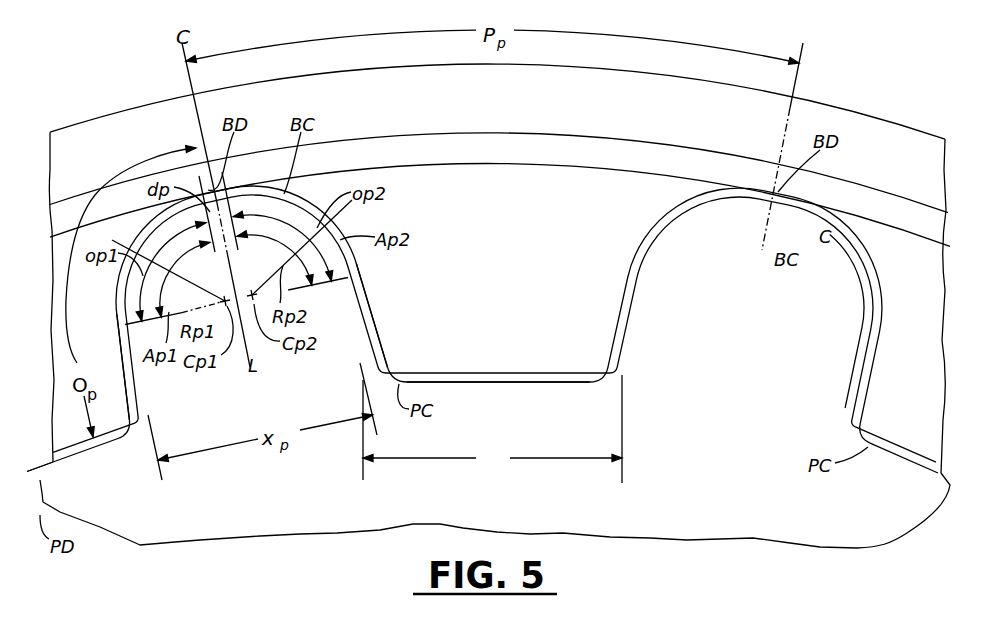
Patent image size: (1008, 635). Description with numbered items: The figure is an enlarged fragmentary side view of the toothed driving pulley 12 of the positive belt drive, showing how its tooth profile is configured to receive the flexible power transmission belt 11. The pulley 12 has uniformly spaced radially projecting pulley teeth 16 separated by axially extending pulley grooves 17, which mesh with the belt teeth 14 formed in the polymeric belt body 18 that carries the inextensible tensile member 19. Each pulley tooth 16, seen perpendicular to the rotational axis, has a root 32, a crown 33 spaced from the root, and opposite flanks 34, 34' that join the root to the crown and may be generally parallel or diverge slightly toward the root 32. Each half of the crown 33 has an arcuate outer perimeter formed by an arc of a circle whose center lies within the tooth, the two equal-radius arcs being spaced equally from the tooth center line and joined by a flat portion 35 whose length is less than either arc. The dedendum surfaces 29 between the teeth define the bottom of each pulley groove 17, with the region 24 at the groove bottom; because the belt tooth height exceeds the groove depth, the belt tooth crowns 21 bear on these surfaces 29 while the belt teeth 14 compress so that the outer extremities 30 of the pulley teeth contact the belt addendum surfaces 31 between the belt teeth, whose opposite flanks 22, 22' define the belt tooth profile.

The flexible power transmission belt 11 is at (110, 122).
The toothed driving pulley 12 is at (760, 487).
The belt teeth 14 is at (580, 342).
The pulley teeth 16 is at (340, 294).
The pulley grooves 17 is at (361, 306).
The belt body 18 is at (803, 117).
The tensile member 19 is at (660, 161).
The crown of belt tooth 21 is at (116, 447).
The flanks of belt tooth 22 is at (362, 364).
The opposite slot side wall 22' is at (610, 318).
The slot bottom inner surface 24 is at (412, 374).
The dedendum surfaces of pulley 29 is at (81, 455).
The outer extremities of pulley teeth 30 is at (796, 235).
The addendum surface of belt 31 is at (832, 228).
The root of pulley tooth 32 is at (265, 410).
The crown of pulley tooth 33 is at (287, 207).
The flanks of pulley tooth 34 is at (532, 327).
The confronting flank of pulley tooth 34' is at (337, 370).
The flat portion 35 is at (232, 190).